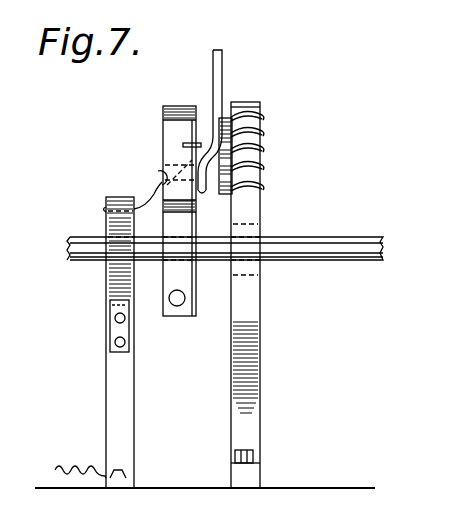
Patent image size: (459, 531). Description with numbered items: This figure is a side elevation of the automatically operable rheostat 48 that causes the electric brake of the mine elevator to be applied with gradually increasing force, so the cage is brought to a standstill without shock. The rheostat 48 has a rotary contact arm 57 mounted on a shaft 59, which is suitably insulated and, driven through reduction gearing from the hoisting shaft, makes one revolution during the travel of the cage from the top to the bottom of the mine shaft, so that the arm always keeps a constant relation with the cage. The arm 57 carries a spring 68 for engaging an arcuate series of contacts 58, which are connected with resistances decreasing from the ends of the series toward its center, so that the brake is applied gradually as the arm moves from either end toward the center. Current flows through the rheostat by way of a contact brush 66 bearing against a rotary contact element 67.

The automatically operable rheostat 48 is at (262, 208).
The rotary contact arm 57 is at (190, 92).
The arcuate series of contacts 58 is at (222, 170).
The shaft 59 is at (326, 248).
The contact brush 66 is at (110, 310).
The rotary contact element 67 is at (120, 203).
The spring 68 is at (222, 60).